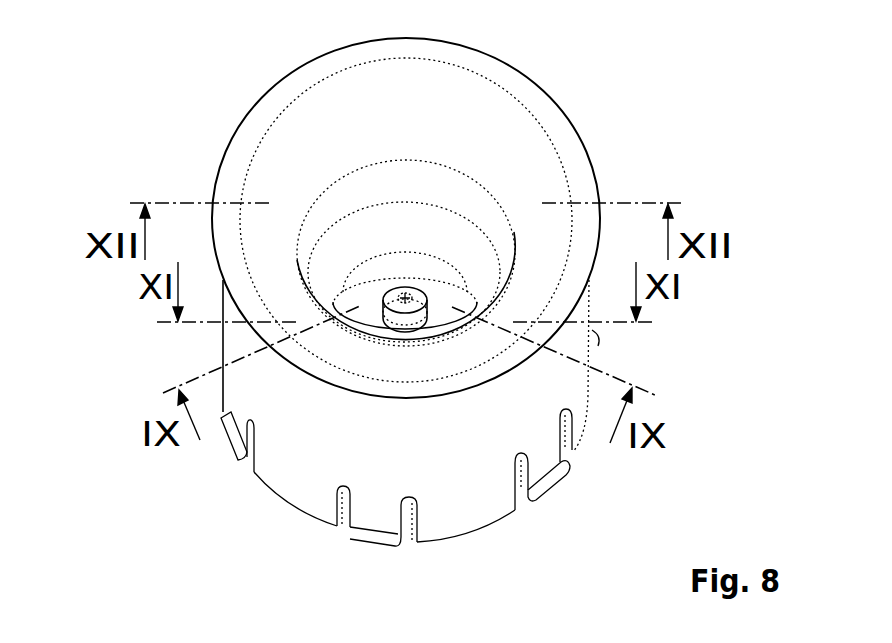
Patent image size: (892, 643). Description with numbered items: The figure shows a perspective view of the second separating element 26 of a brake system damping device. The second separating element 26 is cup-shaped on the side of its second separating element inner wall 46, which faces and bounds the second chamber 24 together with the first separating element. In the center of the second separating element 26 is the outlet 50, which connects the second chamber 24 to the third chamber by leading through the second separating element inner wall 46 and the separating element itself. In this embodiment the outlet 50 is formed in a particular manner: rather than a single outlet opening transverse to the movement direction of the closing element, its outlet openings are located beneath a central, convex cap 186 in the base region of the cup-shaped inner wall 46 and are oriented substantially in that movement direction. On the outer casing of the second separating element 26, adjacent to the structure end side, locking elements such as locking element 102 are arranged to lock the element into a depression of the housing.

The second separating element 26 is at (250, 70).
The second chamber 24 is at (420, 137).
The second separating element inner wall 46 is at (305, 155).
The outlet 50 is at (422, 281).
The convex cap 186 is at (405, 288).
The locking element 102 is at (231, 448).